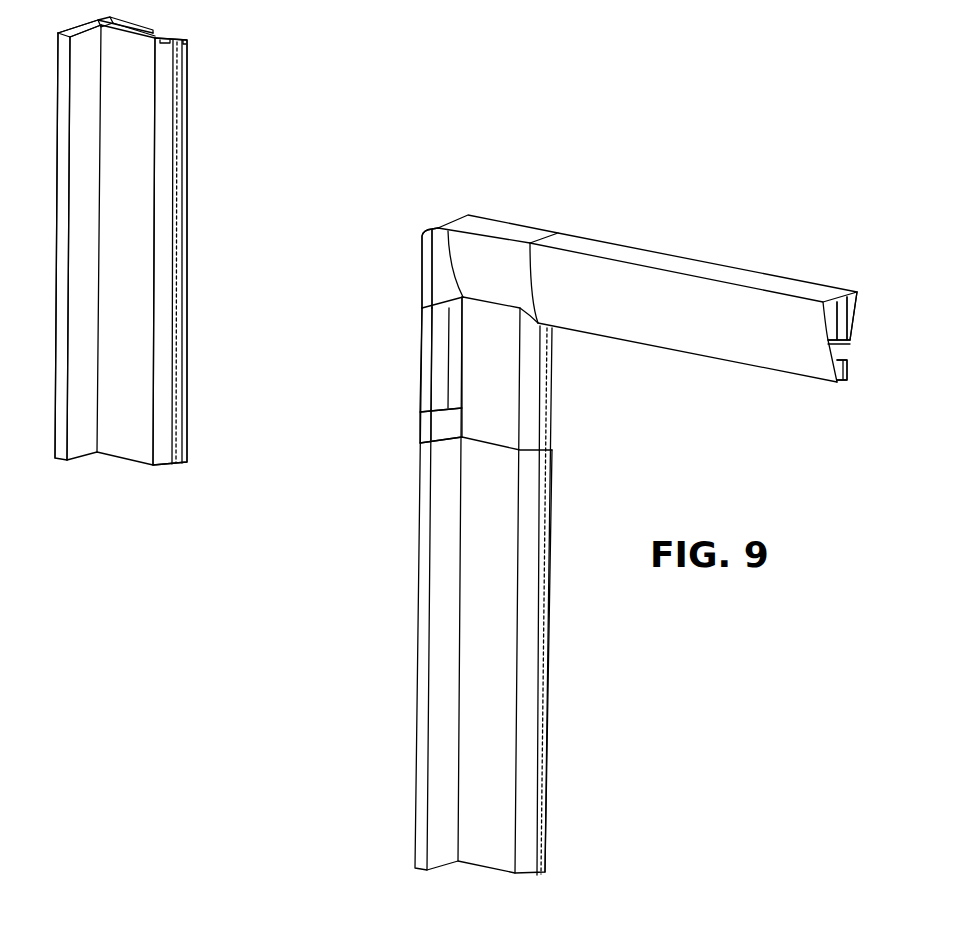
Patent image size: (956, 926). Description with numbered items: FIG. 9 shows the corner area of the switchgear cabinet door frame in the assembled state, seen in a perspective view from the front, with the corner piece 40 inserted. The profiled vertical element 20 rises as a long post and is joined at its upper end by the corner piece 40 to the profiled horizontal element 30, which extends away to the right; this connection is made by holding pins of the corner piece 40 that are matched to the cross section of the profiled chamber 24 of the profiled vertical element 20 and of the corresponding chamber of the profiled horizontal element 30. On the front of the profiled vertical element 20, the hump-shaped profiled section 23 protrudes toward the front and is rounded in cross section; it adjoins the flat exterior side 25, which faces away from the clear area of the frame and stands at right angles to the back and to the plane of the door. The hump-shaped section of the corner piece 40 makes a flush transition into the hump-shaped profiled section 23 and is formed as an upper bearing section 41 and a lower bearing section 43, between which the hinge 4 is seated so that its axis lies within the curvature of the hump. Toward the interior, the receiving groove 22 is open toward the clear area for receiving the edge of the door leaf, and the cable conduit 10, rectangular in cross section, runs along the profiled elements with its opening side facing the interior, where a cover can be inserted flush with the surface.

The hinge 4 is at (428, 362).
The cable conduit 10 is at (157, 34).
The profiled vertical element 20 is at (98, 470).
The receiving groove 22 is at (176, 470).
The hump-shaped profiled section 23 is at (68, 127).
The profiled chamber 24 is at (127, 32).
The flat exterior side 25 is at (72, 32).
The profiled horizontal element 30 is at (688, 252).
The corner piece 40 is at (418, 294).
The upper bearing section 41 is at (422, 258).
The lower bearing section 43 is at (413, 427).